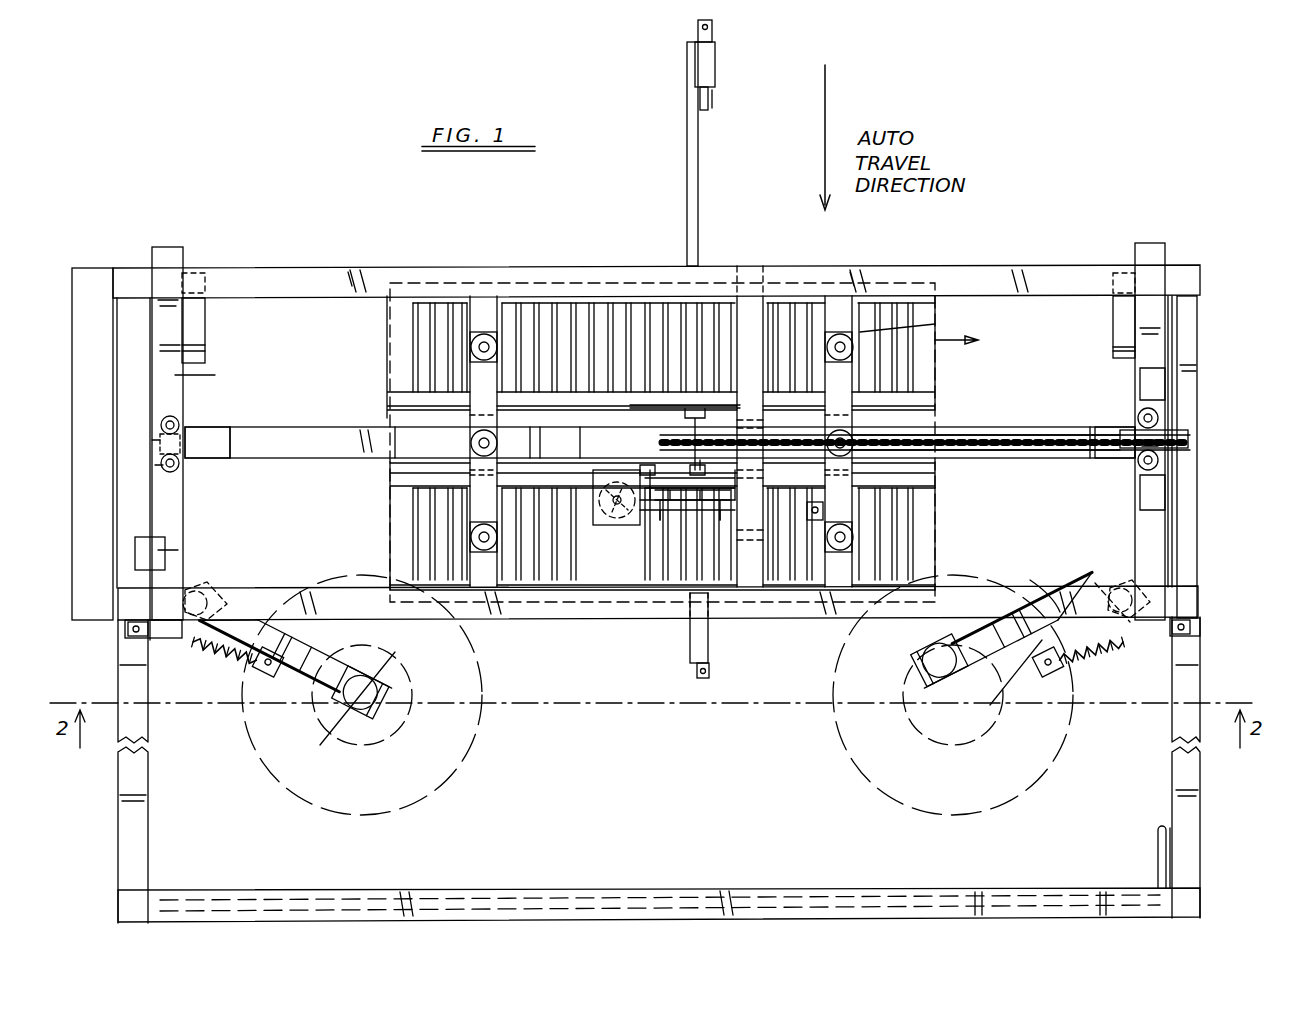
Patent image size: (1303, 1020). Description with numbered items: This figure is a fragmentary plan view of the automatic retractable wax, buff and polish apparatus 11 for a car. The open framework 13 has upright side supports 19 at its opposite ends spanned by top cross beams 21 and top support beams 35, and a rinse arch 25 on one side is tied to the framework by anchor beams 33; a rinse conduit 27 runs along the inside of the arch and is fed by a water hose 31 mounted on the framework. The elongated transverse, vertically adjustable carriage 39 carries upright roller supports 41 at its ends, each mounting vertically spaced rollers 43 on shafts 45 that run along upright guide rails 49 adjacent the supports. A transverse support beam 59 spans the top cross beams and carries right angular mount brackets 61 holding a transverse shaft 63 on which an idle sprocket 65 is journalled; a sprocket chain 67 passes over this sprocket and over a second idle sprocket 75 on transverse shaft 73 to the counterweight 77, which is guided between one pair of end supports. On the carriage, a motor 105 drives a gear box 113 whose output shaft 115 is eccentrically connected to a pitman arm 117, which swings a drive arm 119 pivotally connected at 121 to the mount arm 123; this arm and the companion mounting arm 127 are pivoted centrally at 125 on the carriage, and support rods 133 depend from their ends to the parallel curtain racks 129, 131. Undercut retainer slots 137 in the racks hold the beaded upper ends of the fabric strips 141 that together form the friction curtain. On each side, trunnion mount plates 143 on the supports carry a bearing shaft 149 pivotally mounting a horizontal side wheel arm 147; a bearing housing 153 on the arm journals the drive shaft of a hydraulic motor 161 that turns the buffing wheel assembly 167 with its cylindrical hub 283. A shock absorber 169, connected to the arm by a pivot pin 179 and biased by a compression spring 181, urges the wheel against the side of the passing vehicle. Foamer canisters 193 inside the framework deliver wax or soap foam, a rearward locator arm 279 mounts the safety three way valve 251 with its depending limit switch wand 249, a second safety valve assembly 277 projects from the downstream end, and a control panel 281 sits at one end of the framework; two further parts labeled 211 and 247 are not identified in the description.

The retractable wax, buff and polish apparatus 11 is at (921, 253).
The open framework 13 is at (1036, 261).
The upright side supports 19 is at (142, 272).
The top cross beams 21 is at (410, 275).
The rinse arch 25 is at (914, 890).
The rinse conduit 27 is at (1044, 892).
The water hose 31 is at (1158, 843).
The anchor beams 33 is at (138, 828).
The top support beams 35 is at (195, 376).
The carriage 39 is at (275, 428).
The upright roller supports 41 is at (200, 455).
The rollers 43 is at (160, 460).
The shafts 45 is at (152, 440).
The upright guide rails 49 is at (177, 420).
The transverse support beam 59 is at (750, 318).
The right angular mount brackets 61 is at (670, 402).
The transverse shaft 63 is at (680, 472).
The idle sprocket 65 is at (658, 446).
The sprocket chain 67 is at (1060, 433).
The transverse shaft 73 is at (1160, 418).
The idle sprocket 75 is at (1190, 438).
The counterweight 77 is at (1190, 505).
The motor 105 is at (665, 520).
The gear box 113 is at (617, 515).
The output shaft 115 is at (600, 472).
The pitman arm 117 is at (600, 522).
The drive arm 119 is at (695, 490).
The pivotal connection 121 is at (812, 522).
The mount arm 123 is at (852, 398).
The pivot 125 is at (470, 443).
The mounting arm 127 is at (470, 420).
The curtain rack 129 is at (395, 523).
The curtain rack 131 is at (940, 326).
The support rods 133 is at (470, 345).
The retainer slots 137 is at (915, 552).
The fabric strips 141 is at (1050, 600).
The trunnion mount plates 143 is at (1090, 583).
The side wheel arm 147 is at (290, 648).
The bearing shaft 149 is at (210, 590).
The bearing housing 153 is at (395, 705).
The hydraulic motor 161 is at (340, 700).
The buffing wheel and polish assembly 167 is at (480, 740).
The shock absorber 169 is at (165, 640).
The pivot pin 179 is at (262, 676).
The compression spring 181 is at (222, 664).
The foamer canisters 193 is at (200, 322).
The switch box 211 is at (165, 552).
The cylinder rod end 247 is at (718, 98).
The limit switch wand 249 is at (696, 34).
The three way valve 251 is at (716, 66).
The safety valve assembly 277 is at (692, 640).
The locator arm 279 is at (686, 180).
The control panel 281 is at (98, 284).
The hub 283 is at (355, 738).